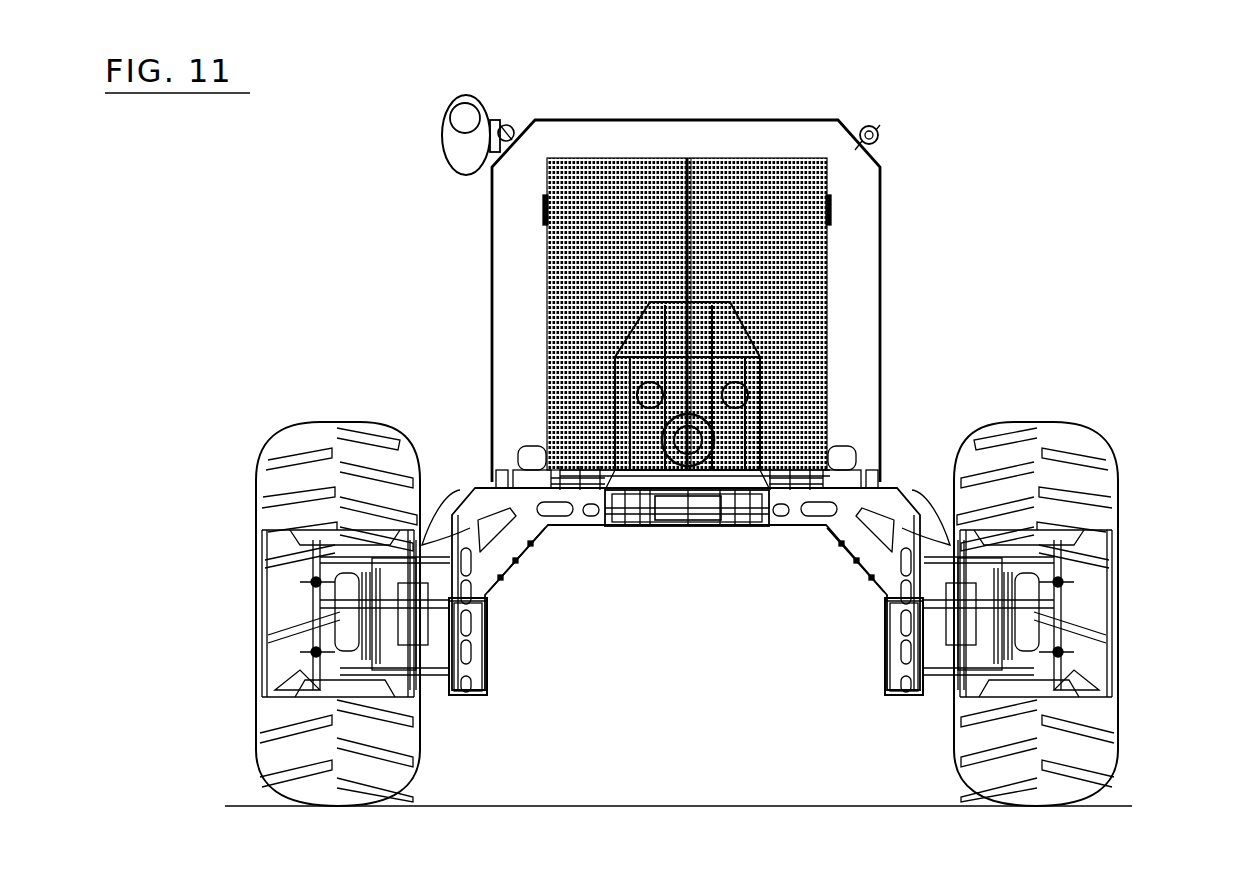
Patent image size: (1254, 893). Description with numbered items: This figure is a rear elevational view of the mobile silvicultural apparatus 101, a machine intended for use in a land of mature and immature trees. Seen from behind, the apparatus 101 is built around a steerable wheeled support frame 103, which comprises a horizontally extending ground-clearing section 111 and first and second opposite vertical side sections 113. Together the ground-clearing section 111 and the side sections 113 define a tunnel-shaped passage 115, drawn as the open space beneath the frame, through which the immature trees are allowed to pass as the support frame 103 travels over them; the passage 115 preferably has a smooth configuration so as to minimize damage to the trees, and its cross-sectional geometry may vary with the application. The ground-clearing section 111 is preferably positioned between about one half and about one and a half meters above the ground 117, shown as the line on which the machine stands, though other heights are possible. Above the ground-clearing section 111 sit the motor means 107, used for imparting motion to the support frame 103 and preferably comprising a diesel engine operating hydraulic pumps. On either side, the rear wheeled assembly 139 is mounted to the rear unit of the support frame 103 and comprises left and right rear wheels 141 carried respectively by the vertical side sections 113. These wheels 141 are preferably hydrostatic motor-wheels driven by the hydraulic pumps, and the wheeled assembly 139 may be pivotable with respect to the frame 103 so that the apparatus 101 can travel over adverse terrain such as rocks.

The mobile silvicultural apparatus 101 is at (1058, 96).
The steerable wheeled support frame 103 is at (457, 488).
The motor means 107 is at (707, 88).
The ground-clearing section 111 is at (668, 527).
The vertical side sections 113 is at (487, 641).
The tunnel-shaped passage 115 is at (719, 689).
The ground 117 is at (512, 805).
The rear wheeled assembly 139 is at (320, 396).
The wheels 141 is at (280, 492).